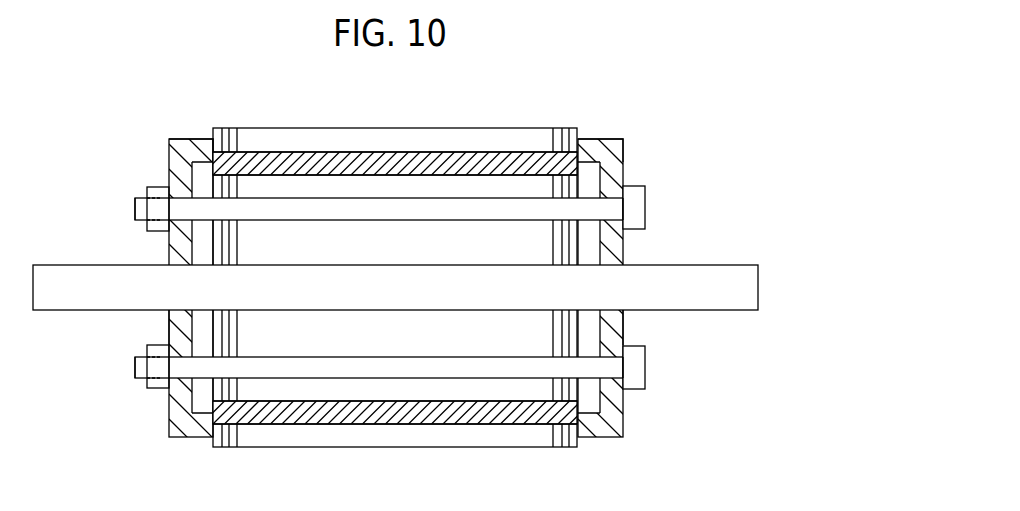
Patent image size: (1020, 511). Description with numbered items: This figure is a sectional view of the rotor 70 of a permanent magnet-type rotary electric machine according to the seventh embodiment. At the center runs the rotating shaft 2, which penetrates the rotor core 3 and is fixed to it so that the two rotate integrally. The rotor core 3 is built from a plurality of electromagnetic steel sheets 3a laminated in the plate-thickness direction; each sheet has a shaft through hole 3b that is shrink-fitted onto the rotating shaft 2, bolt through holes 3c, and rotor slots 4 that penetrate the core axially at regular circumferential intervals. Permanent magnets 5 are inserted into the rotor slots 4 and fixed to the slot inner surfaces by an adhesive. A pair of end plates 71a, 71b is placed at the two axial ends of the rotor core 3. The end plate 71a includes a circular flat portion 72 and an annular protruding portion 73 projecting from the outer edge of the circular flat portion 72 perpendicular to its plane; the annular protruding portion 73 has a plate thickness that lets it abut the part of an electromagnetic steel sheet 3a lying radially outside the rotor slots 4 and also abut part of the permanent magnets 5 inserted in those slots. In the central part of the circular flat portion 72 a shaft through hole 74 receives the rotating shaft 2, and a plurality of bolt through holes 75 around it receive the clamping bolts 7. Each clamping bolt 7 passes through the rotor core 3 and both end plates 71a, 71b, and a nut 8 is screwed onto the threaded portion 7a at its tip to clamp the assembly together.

The rotor 70 is at (614, 102).
The end plate 71a is at (168, 134).
The end plate 71b is at (623, 136).
The circular flat portion 72 is at (169, 333).
The annular protruding portion 73 is at (197, 150).
The shaft through hole 74 is at (182, 304).
The bolt through hole 75 is at (164, 196).
The clamping bolt 7 is at (641, 212).
The threaded portion 7a is at (136, 208).
The nut 8 is at (156, 230).
The rotating shaft 2 is at (726, 278).
The rotor core 3 is at (275, 138).
The electromagnetic steel sheet 3a is at (230, 128).
The shaft through hole 3b is at (512, 274).
The bolt through hole 3c is at (358, 200).
The rotor slot 4 is at (478, 156).
The permanent magnet 5 is at (317, 158).